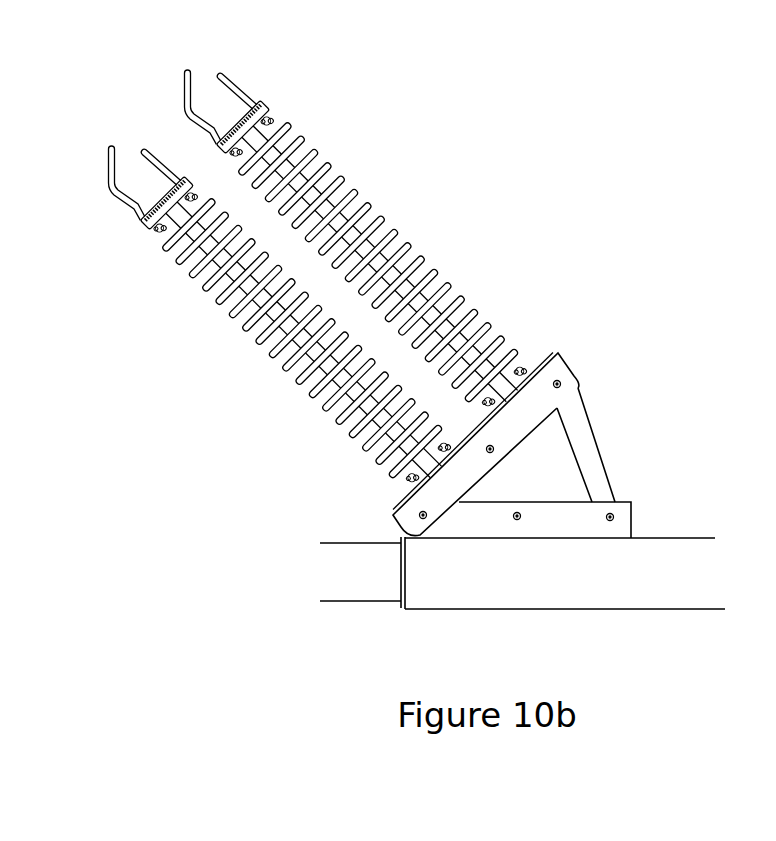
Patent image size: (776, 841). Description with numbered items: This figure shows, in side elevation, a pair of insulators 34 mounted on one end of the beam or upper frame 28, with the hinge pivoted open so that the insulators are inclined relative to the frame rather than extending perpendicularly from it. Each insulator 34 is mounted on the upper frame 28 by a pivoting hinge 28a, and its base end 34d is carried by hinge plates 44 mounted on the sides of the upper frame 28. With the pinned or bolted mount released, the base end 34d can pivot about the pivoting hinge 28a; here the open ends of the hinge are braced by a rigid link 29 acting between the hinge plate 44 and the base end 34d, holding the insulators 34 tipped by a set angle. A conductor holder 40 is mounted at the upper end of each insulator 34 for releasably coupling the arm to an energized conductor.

The upper frame 28 is at (678, 538).
The pivoting hinge 28a is at (378, 513).
The link 29 is at (594, 432).
The insulator 34 is at (392, 180).
The base end 34d is at (567, 365).
The conductor holder 40 is at (238, 82).
The hinge plate 44 is at (634, 512).